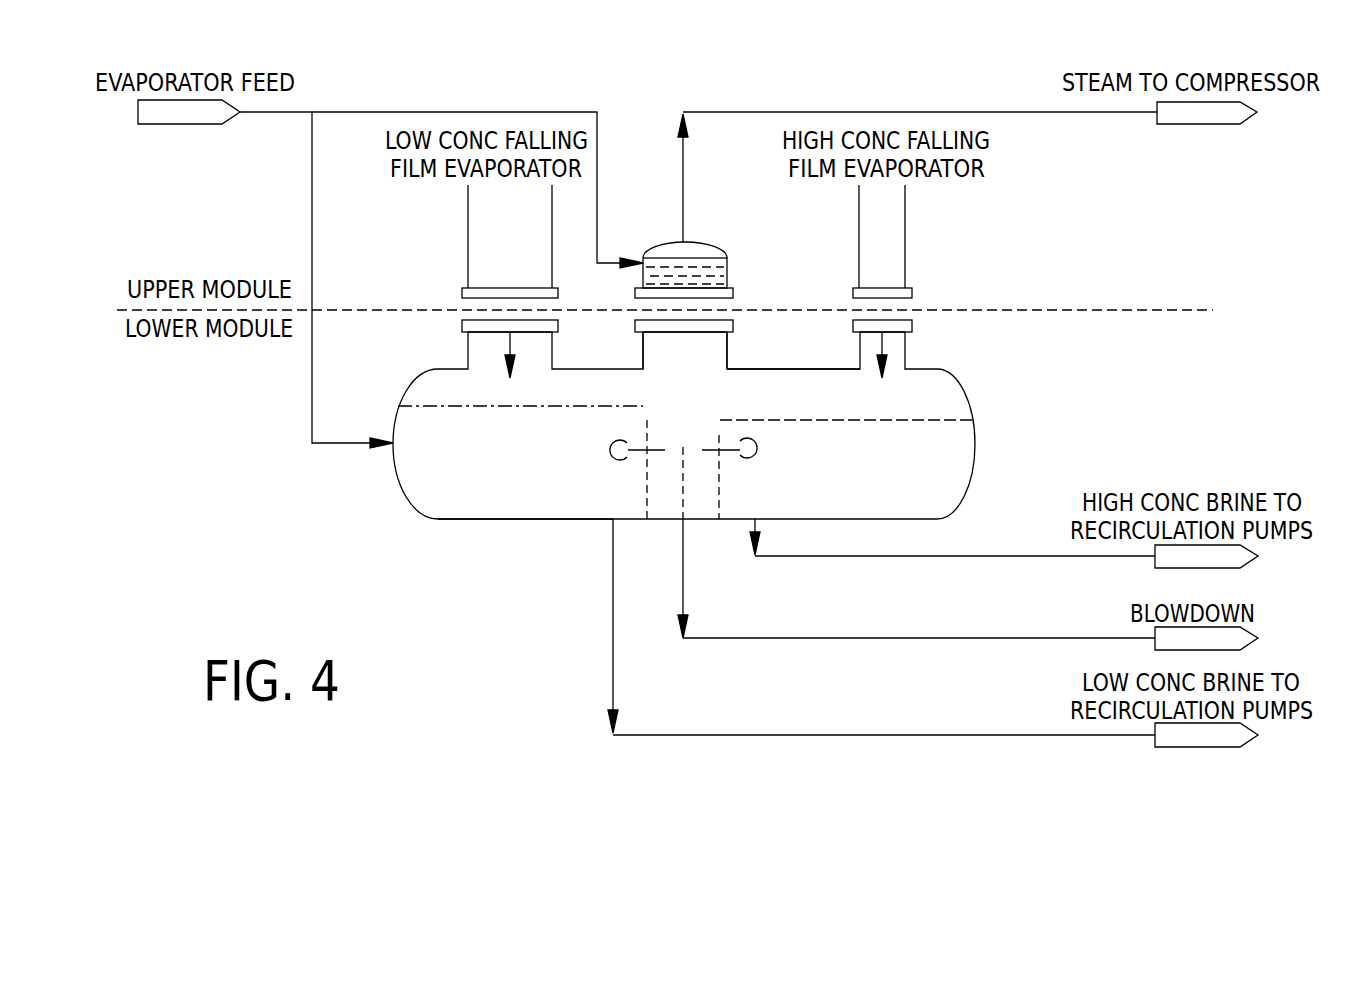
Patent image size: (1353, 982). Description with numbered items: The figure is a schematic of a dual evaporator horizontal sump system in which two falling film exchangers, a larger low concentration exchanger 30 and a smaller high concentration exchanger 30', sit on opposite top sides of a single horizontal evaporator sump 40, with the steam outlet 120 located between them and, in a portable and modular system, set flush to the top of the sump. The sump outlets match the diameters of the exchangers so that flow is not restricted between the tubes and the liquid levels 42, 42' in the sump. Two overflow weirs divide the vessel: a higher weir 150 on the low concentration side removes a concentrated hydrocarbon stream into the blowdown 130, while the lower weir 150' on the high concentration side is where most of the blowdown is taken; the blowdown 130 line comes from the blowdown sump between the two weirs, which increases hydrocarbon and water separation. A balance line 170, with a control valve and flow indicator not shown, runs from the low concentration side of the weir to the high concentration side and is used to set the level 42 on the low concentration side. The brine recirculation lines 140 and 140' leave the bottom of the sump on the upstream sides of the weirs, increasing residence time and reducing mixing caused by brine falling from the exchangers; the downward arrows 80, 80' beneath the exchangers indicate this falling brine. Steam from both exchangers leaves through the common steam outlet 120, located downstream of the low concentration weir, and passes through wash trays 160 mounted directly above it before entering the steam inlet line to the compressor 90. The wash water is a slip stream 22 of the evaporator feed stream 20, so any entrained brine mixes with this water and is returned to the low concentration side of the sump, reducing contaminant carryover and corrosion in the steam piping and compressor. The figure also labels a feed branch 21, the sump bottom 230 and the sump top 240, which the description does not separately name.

The evaporator feed stream 20 is at (290, 112).
The feed line to vapor-liquid separator 21 is at (312, 235).
The slip stream 22 is at (417, 112).
The low concentration exchanger 30 is at (466, 241).
The high concentration exchanger 30' is at (930, 241).
The horizontal evaporator sump 40 is at (390, 502).
The liquid level 42 is at (520, 425).
The liquid level 42' is at (847, 402).
The low concentration brine return 80 is at (464, 352).
The high concentration brine return 80' is at (933, 349).
The steam inlet line to the compressor 90 is at (1205, 124).
The steam outlet 120 is at (728, 352).
The evaporator blowdown 130 is at (765, 640).
The low concentration brine recirculation 140 is at (888, 633).
The high concentration brine recirculation 140' is at (1004, 558).
The higher overflow weir 150 is at (601, 440).
The lower overflow weir 150' is at (779, 440).
The wash trays 160 is at (657, 246).
The balance line 170 is at (730, 452).
The separator vessel bottom 230 is at (492, 520).
The separator vessel top 240 is at (760, 367).